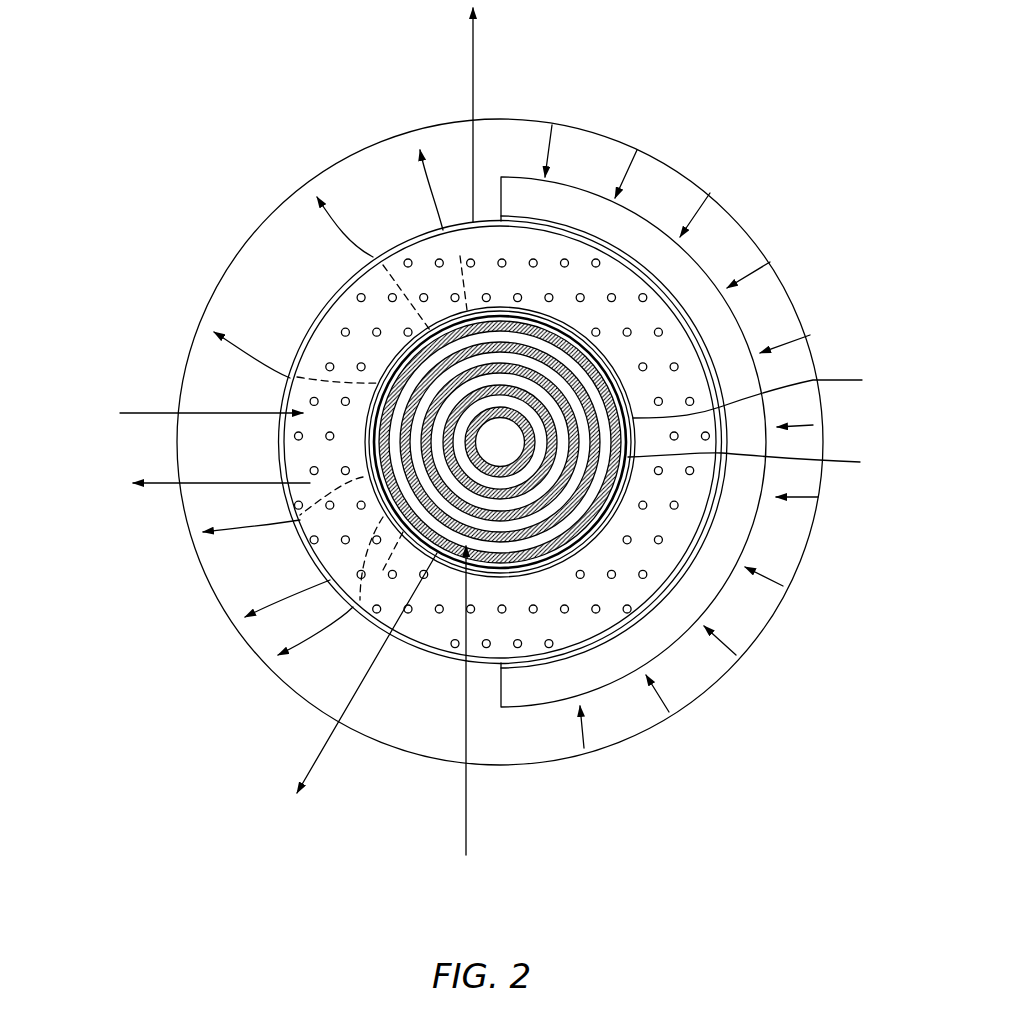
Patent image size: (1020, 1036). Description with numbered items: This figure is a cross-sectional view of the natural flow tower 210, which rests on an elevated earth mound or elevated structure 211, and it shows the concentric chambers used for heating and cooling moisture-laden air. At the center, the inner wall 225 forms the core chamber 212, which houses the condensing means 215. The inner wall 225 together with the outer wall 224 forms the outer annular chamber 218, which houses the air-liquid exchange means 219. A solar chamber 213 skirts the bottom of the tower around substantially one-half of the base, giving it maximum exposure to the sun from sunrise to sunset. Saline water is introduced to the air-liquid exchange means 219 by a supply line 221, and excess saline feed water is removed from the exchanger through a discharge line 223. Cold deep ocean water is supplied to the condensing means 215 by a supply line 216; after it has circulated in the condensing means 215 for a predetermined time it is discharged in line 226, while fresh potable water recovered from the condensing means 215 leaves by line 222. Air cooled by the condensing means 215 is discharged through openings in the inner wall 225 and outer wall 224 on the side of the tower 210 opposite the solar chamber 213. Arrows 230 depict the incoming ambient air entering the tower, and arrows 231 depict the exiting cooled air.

The natural flow tower 210 is at (410, 114).
The elevated earth mound or elevated structure 211 is at (690, 178).
The core chamber 212 is at (537, 340).
The solar chamber 213 is at (705, 585).
The condensing means 215 is at (763, 464).
The supply line 216 is at (466, 818).
The outer annular chamber 218 is at (350, 312).
The air-liquid exchange means 219 is at (310, 539).
The supply line 221 is at (155, 413).
The line 222 is at (473, 57).
The discharge line 223 is at (160, 483).
The outer wall 224 is at (715, 372).
The inner wall 225 is at (765, 394).
The discharge line 226 is at (313, 763).
The arrows depicting incoming ambient air 230 is at (765, 265).
The arrows depicting exiting cooled air 231 is at (427, 187).